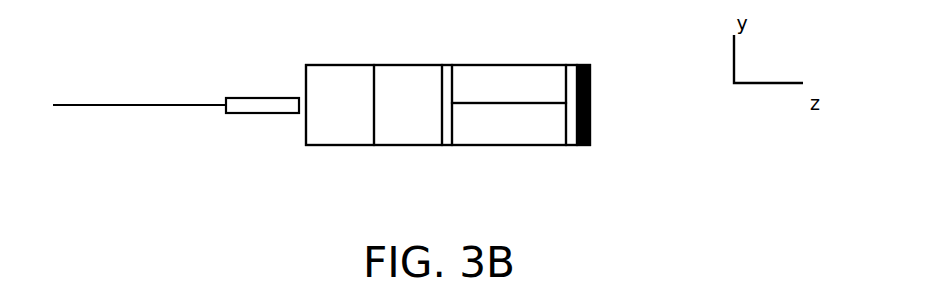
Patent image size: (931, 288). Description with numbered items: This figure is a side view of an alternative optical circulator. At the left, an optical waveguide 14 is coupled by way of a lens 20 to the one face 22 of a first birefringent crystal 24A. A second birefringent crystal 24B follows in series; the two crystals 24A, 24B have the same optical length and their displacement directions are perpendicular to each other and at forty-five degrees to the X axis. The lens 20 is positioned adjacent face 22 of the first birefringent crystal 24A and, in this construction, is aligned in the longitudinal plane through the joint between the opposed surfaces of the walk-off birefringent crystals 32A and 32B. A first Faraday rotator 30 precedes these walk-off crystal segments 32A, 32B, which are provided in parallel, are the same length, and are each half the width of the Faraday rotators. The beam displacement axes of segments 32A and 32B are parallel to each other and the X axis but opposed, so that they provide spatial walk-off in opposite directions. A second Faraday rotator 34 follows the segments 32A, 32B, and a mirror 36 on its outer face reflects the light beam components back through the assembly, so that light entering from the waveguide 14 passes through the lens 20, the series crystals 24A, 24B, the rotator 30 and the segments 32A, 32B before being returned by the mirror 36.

The optical waveguide 14 is at (102, 105).
The lens 20 is at (245, 98).
The face of first birefringent crystal 22 is at (305, 133).
The first birefringent crystal 24A is at (328, 65).
The second birefringent crystal 24B is at (412, 65).
The first Faraday rotator 30 is at (443, 145).
The birefringent crystal segment 32A is at (500, 67).
The birefringent crystal segment 32B is at (500, 140).
The second Faraday rotator 34 is at (569, 65).
The mirror 36 is at (583, 65).